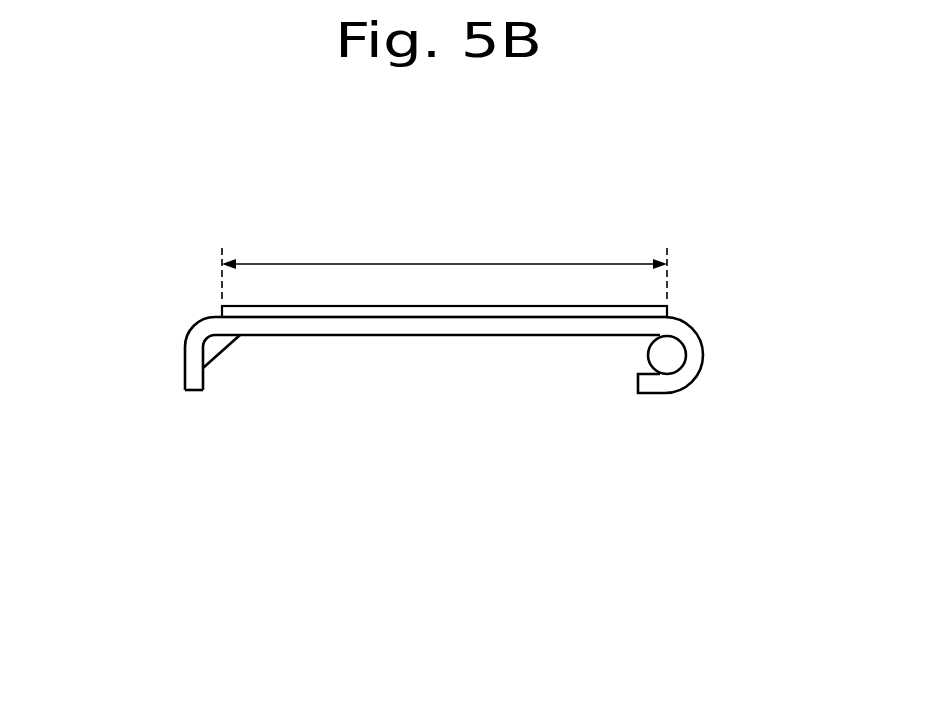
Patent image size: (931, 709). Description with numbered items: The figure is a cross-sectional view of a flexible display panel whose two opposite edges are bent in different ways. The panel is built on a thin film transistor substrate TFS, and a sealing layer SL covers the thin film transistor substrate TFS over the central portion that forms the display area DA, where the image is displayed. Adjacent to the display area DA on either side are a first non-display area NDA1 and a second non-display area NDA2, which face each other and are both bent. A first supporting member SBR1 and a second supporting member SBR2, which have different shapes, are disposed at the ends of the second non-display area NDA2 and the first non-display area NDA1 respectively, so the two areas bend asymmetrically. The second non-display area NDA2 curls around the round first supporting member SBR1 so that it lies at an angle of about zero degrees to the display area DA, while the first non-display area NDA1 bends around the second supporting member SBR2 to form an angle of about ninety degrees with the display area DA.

The thin film transistor substrate TFS is at (375, 326).
The sealing layer SL is at (516, 312).
The first supporting member SBR1 is at (667, 363).
The second supporting member SBR2 is at (223, 366).
The first non-display area NDA1 is at (166, 347).
The second non-display area NDA2 is at (724, 351).
The display area DA is at (444, 267).